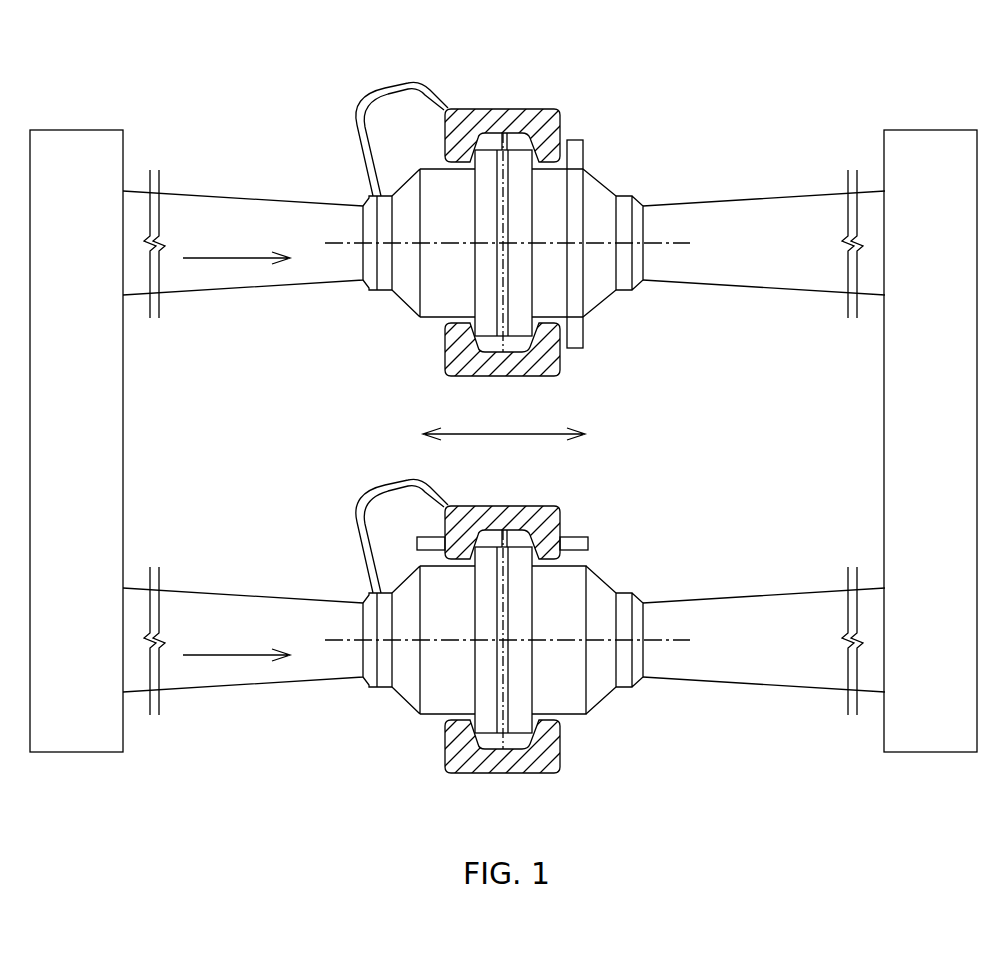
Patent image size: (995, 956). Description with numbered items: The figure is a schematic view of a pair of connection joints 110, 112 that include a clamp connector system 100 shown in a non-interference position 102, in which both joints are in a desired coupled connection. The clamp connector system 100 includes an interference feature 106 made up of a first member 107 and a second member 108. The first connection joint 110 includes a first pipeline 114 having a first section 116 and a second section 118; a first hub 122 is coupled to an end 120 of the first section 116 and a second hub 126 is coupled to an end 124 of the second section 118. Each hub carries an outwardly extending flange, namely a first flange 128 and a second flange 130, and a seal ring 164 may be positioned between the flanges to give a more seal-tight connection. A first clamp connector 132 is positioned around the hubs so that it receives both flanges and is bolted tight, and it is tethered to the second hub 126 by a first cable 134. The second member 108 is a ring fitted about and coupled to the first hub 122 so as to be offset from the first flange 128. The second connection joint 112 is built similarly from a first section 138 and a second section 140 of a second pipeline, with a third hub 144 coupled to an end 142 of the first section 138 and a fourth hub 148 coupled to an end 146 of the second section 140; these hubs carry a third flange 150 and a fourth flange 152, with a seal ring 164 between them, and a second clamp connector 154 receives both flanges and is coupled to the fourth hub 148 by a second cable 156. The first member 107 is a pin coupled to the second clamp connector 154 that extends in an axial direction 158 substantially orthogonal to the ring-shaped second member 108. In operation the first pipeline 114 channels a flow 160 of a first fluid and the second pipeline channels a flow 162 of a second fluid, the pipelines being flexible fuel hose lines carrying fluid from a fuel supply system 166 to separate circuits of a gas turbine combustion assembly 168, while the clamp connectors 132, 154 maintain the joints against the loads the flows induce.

The clamp connector system 100 is at (504, 432).
The non-interference position 102 is at (750, 90).
The interference feature 106 is at (558, 359).
The first member 107 is at (551, 527).
The second member 108 is at (583, 325).
The first connection joint 110 is at (725, 155).
The second connection joint 112 is at (504, 629).
The first pipeline 114 is at (764, 246).
The first section 116 is at (730, 290).
The second section 118 is at (210, 292).
The end 120 is at (645, 283).
The first hub 122 is at (600, 180).
The end 124 is at (363, 204).
The second hub 126 is at (402, 313).
The first flange 128 is at (583, 350).
The second flange 130 is at (455, 318).
The first clamp connector 132 is at (515, 378).
The first cable 134 is at (410, 82).
The first section 138 is at (764, 642).
The second section 140 is at (243, 646).
The end 142 is at (661, 626).
The third hub 144 is at (625, 630).
The end 146 is at (346, 654).
The fourth hub 148 is at (382, 651).
The third flange 150 is at (589, 667).
The fourth flange 152 is at (419, 668).
The second clamp connector 154 is at (498, 763).
The second cable 156 is at (414, 520).
The axial direction 158 is at (495, 433).
The flow of first fluid 160 is at (205, 258).
The flow of second fluid 162 is at (236, 641).
The seal ring 164 is at (504, 160).
The fuel supply system 166 is at (93, 453).
The gas turbine combustion assembly 168 is at (948, 453).